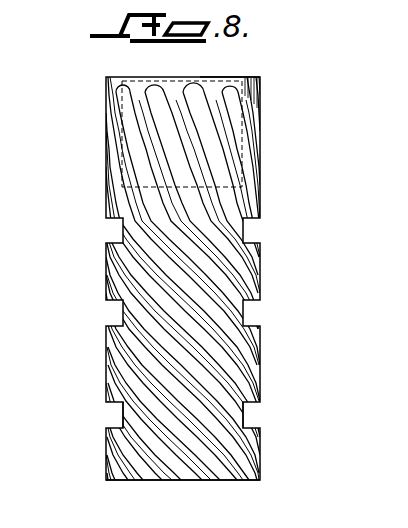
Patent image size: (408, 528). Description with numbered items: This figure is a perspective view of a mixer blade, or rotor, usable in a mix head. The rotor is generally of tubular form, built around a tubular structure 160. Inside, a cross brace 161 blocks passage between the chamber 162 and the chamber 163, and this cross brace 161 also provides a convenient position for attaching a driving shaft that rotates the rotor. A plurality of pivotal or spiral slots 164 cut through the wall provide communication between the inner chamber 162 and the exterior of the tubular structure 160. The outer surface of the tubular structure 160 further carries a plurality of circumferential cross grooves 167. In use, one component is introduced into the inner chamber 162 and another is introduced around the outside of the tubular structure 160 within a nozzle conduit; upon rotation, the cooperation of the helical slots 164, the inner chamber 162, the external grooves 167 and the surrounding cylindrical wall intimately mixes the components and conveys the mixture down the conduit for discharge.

The tubular structure 160 is at (166, 271).
The cross brace 161 is at (218, 272).
The inner chamber 162 is at (224, 74).
The chamber 163 is at (212, 479).
The spiral slots 164 is at (150, 87).
The cross grooves 167 is at (122, 412).